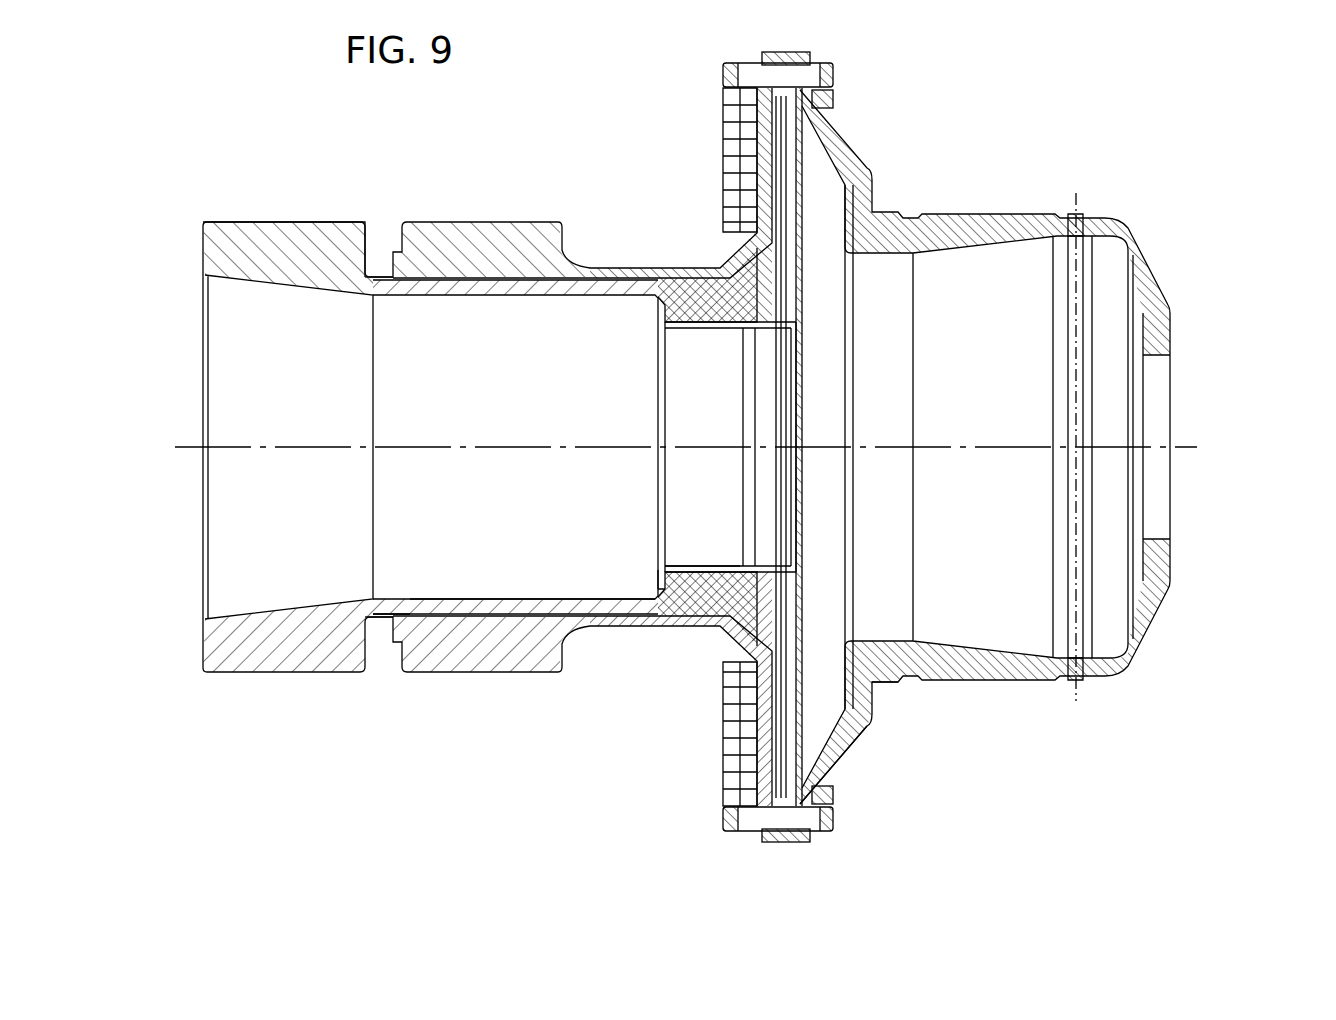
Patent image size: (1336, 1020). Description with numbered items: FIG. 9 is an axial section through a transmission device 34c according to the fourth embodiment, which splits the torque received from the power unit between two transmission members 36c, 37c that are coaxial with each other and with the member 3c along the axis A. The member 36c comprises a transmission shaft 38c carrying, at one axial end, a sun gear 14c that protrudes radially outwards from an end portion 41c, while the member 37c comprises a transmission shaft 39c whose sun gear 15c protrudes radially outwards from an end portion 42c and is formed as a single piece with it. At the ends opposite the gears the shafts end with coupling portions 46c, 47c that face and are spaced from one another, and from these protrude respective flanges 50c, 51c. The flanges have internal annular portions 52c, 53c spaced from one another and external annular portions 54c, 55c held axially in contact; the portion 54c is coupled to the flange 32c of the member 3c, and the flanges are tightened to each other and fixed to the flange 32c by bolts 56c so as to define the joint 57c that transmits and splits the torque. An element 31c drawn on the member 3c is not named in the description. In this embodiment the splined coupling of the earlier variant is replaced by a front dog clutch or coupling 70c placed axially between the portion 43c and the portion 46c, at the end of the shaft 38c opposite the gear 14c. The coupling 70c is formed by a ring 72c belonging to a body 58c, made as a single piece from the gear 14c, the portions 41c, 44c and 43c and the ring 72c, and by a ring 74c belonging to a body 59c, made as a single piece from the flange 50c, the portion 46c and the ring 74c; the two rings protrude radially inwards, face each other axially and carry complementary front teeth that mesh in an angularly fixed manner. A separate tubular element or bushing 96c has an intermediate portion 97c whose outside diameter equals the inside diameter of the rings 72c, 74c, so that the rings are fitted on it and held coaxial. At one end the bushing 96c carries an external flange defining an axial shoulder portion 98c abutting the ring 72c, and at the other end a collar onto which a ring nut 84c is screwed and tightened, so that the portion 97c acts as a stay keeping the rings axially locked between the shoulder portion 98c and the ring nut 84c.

The sun gear 14c is at (258, 668).
The transmission member 36c is at (204, 220).
The transmission member 37c is at (407, 221).
The transmission shaft 38c is at (378, 624).
The transmission shaft 39c is at (602, 634).
The sun gear 15c is at (473, 675).
The end portion 41c is at (268, 610).
The end portion 42c is at (530, 599).
The portion 43c is at (574, 599).
The portion 44c is at (387, 613).
The body 58c is at (467, 597).
The front dog clutch or coupling 70c is at (718, 268).
The ring 72c is at (658, 330).
The ring 74c is at (748, 332).
The tubular element or bushing 96c is at (700, 563).
The intermediate portion 97c is at (737, 565).
The axial shoulder portion 98c is at (670, 580).
The coupling portion 46c is at (806, 638).
The body 59c is at (802, 710).
The ring nut 84c is at (845, 296).
The transmission device 34c is at (970, 104).
The flange 32c is at (876, 190).
The cylindrical body 31c is at (996, 683).
The member 3c is at (1101, 682).
The coupling portion 47c is at (752, 640).
The internal annular portion 53c is at (745, 668).
The flange 51c is at (754, 745).
The external annular portion 55c is at (725, 806).
The external annular portion 54c is at (835, 812).
The joint 57c is at (788, 848).
The screws or bolts 56c is at (834, 786).
The internal annular portion 52c is at (872, 698).
The flange 50c is at (850, 742).
The axis A is at (1184, 447).